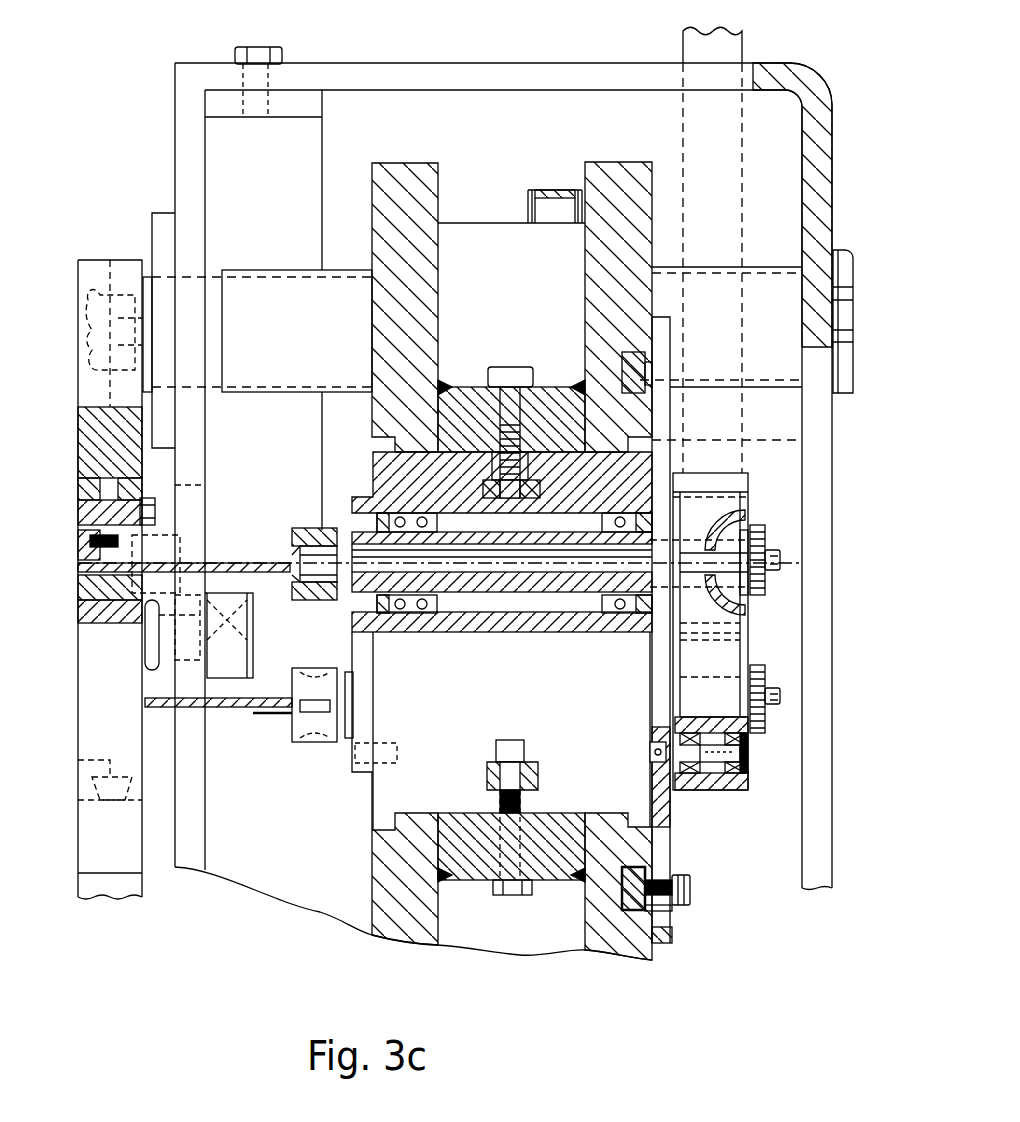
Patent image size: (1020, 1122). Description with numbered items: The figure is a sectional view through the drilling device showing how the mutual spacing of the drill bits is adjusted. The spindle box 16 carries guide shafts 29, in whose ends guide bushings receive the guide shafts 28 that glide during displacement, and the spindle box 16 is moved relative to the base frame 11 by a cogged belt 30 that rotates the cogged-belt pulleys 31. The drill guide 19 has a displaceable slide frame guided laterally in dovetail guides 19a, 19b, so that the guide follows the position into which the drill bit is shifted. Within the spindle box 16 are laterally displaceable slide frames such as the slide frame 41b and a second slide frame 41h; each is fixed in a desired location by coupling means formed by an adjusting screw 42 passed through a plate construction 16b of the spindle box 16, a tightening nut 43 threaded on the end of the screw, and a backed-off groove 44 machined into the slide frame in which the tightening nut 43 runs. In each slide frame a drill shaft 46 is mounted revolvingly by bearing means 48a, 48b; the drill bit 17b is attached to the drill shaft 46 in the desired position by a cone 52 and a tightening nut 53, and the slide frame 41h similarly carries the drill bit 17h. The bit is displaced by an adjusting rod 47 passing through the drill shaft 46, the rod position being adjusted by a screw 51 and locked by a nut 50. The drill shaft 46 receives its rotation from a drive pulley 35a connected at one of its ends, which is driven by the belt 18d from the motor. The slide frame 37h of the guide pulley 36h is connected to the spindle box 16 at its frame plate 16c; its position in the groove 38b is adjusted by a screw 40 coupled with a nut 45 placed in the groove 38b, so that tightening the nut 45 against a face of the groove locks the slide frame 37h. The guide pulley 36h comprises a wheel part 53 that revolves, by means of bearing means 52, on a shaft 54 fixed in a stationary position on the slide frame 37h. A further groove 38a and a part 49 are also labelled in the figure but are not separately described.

The base frame 11 is at (790, 70).
The spindle box 16 is at (393, 166).
The plate construction 16b is at (452, 395).
The frame plate 16c is at (612, 945).
The drill bit 17b is at (225, 560).
The drill bit 17h is at (225, 707).
The belt 18d is at (730, 452).
The drill guide 19 is at (78, 645).
The dovetail guide 19a is at (80, 762).
The dovetail guide 19b is at (78, 462).
The guide shaft 28 is at (143, 300).
The guide shaft 29 is at (261, 283).
The cogged belt 30 is at (549, 190).
The cogged-belt pulley 31 is at (538, 208).
The gear housing 35a is at (748, 478).
The guide pulley 36h is at (765, 810).
The slide frame 37h is at (662, 810).
The upper spacer 38a is at (640, 315).
The groove 38b is at (662, 945).
The screw 40 is at (688, 888).
The slide frame 41b is at (385, 475).
The slide frame 41h is at (385, 780).
The adjusting screw 42 is at (515, 375).
The tightening nut 43 is at (528, 488).
The backed-off groove 44 is at (487, 458).
The nut 45 is at (672, 912).
The drill shaft 46 is at (490, 580).
The adjusting rod 47 is at (545, 580).
The bearing means 48a is at (428, 615).
The bearing means 48b is at (613, 615).
The drive shaft 49 is at (745, 527).
The nut 50 is at (765, 537).
The screw 51 is at (773, 567).
The cone 52 is at (322, 600).
The tightening nut 53 is at (303, 527).
The shaft 54 is at (730, 753).